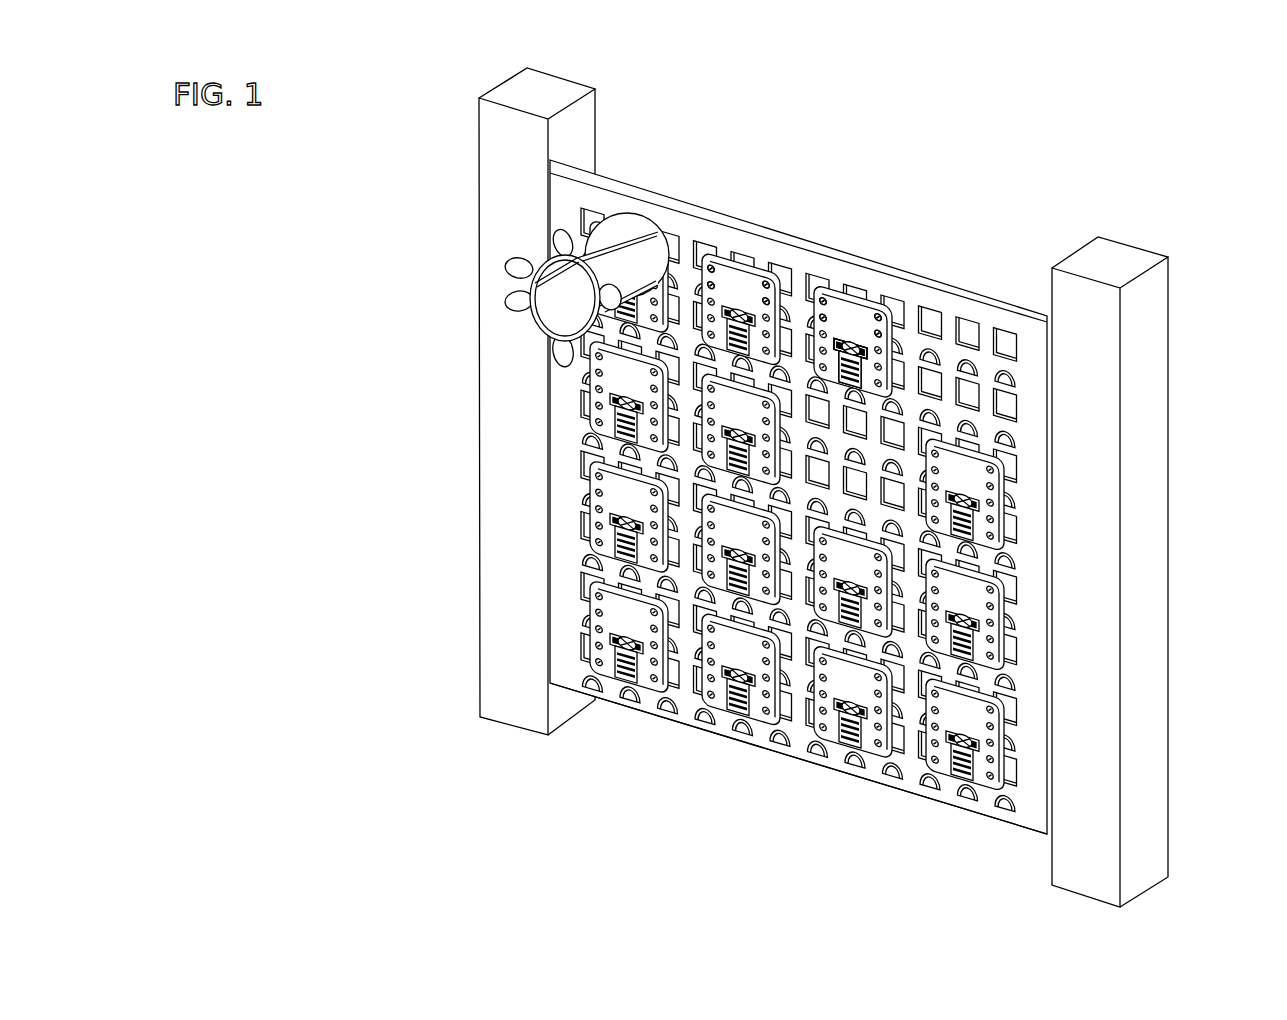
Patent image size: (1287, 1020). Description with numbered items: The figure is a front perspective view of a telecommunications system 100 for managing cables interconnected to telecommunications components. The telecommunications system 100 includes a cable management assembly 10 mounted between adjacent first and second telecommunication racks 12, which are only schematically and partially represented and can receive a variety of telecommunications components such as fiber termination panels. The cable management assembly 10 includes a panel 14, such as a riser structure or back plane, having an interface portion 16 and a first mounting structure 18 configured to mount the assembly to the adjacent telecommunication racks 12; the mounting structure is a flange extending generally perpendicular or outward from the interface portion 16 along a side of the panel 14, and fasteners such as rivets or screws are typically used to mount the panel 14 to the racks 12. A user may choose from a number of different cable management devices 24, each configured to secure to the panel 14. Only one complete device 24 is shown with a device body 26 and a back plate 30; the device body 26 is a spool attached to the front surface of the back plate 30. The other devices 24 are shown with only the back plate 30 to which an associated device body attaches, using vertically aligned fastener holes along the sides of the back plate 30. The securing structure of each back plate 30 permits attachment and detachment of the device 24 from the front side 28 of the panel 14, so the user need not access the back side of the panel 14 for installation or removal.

The telecommunications system 100 is at (382, 213).
The cable management assembly 10 is at (827, 157).
The telecommunication rack 12 is at (507, 451).
The panel 14 is at (634, 734).
The interface portion 16 is at (912, 767).
The first mounting structure 18 is at (567, 160).
The cable management device 24 is at (507, 322).
The device body 26 is at (585, 245).
The front side 28 is at (801, 737).
The back plate 30 is at (657, 233).